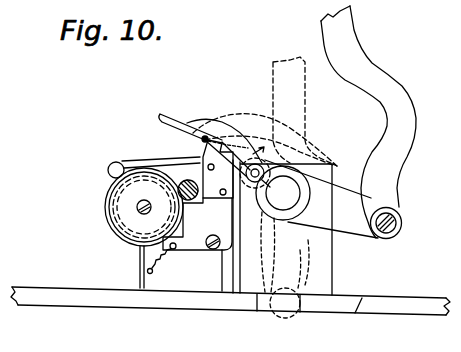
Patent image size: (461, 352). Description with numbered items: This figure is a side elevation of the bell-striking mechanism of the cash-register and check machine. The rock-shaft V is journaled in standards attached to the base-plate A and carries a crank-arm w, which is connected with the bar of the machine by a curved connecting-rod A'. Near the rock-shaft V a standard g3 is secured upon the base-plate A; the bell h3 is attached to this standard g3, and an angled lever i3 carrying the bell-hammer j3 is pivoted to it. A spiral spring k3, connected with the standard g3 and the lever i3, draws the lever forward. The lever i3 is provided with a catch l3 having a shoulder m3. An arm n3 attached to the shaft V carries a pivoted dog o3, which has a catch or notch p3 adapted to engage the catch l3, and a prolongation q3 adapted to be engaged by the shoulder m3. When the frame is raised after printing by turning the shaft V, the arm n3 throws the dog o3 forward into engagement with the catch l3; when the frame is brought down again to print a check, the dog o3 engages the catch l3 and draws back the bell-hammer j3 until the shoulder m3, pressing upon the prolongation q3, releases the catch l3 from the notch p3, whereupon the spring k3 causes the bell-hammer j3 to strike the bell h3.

The base-plate A is at (233, 272).
The curved connecting-rods A' is at (368, 122).
The rock-shaft V is at (283, 193).
The crank-arm w is at (333, 199).
The bell h3 is at (144, 228).
The bell-hammer j3 is at (154, 159).
The catch l3 is at (205, 170).
The angled lever i3 is at (197, 224).
The standard g3 is at (204, 270).
The spiral spring k3 is at (164, 262).
The prolongation q3 is at (162, 117).
The shoulder m3 is at (219, 144).
The catch (notch) p3 is at (204, 136).
The dog o3 is at (213, 125).
The arm n3 is at (265, 188).